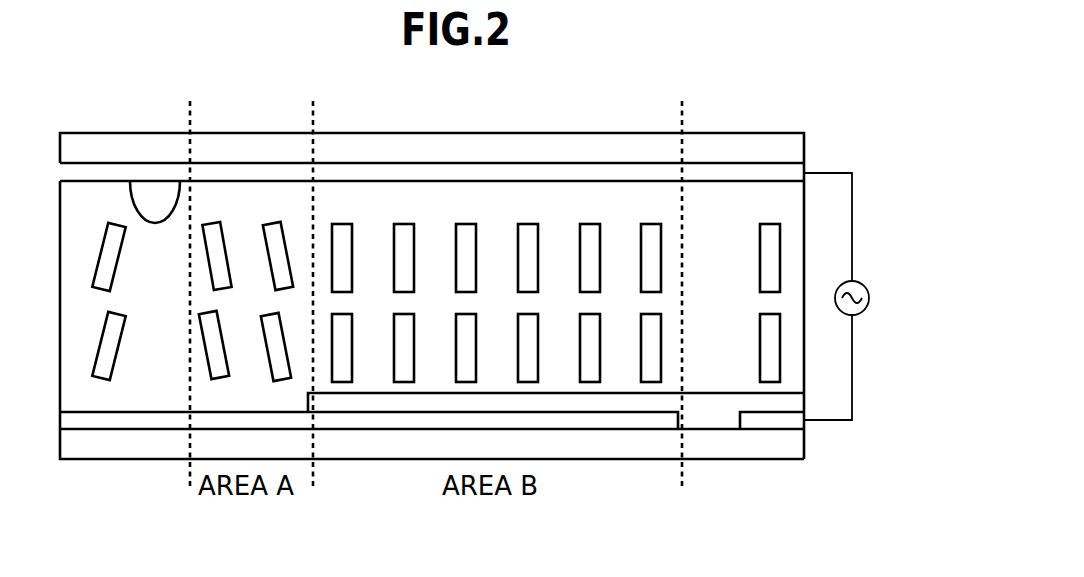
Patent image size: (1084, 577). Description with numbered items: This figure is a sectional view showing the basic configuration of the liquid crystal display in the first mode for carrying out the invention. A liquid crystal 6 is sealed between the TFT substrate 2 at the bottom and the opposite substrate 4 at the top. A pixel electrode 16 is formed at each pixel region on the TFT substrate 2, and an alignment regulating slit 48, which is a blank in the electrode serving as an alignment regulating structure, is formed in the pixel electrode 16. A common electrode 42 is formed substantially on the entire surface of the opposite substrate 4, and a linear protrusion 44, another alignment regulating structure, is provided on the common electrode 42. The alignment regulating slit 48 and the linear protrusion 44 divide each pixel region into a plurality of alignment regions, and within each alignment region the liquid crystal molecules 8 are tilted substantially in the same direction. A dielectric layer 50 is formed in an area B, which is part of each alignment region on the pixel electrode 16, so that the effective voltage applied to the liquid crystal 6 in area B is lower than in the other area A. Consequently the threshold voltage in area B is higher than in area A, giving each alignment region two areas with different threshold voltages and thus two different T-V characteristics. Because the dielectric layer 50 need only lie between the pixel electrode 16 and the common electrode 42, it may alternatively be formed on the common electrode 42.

The TFT substrate 2 is at (793, 450).
The opposite substrate 4 is at (797, 142).
The liquid crystal 6 is at (795, 243).
The liquid crystal molecules 8 is at (655, 254).
The pixel electrode 16 is at (793, 424).
The common electrode 42 is at (797, 171).
The linear protrusion 44 is at (156, 208).
The alignment regulating slit 48 is at (718, 442).
The dielectric layer 50 is at (793, 403).